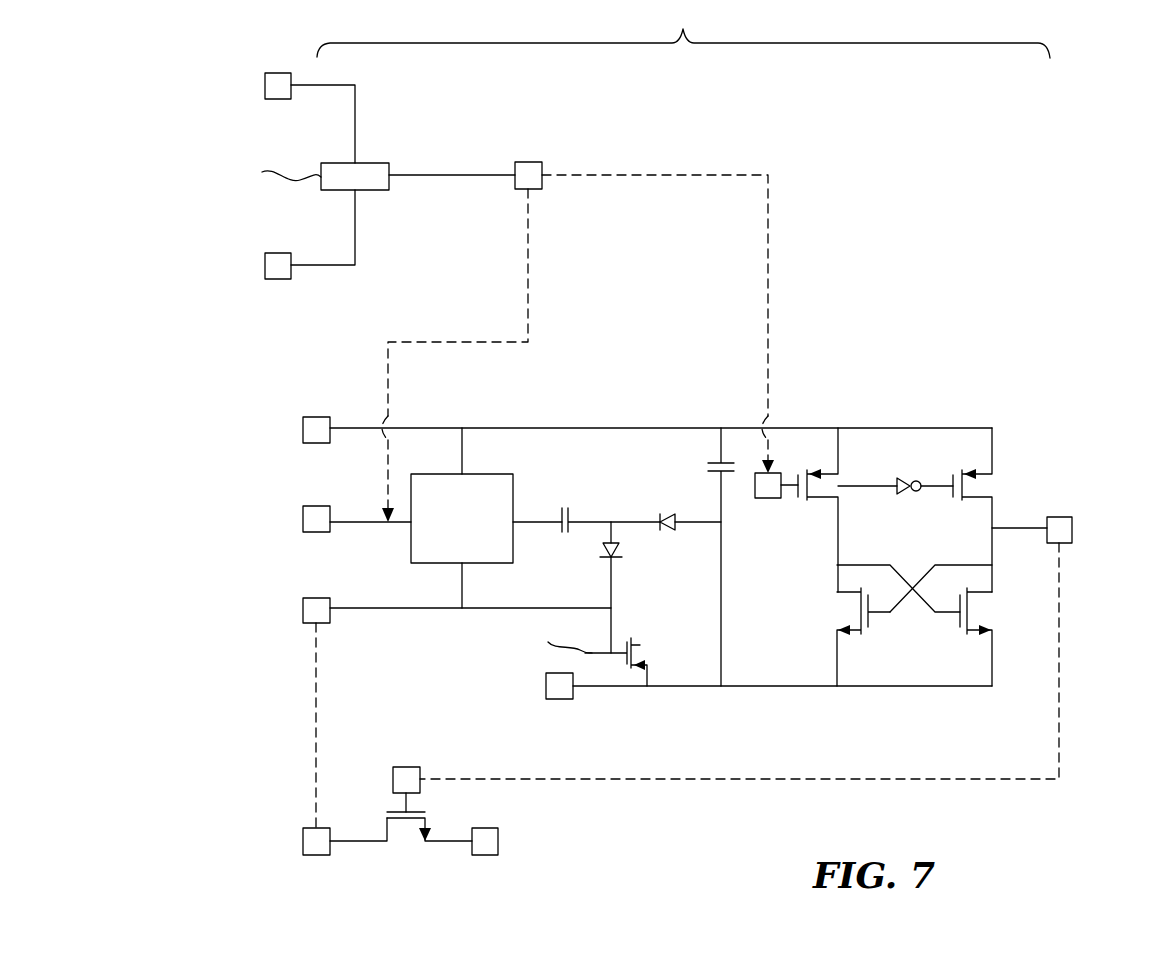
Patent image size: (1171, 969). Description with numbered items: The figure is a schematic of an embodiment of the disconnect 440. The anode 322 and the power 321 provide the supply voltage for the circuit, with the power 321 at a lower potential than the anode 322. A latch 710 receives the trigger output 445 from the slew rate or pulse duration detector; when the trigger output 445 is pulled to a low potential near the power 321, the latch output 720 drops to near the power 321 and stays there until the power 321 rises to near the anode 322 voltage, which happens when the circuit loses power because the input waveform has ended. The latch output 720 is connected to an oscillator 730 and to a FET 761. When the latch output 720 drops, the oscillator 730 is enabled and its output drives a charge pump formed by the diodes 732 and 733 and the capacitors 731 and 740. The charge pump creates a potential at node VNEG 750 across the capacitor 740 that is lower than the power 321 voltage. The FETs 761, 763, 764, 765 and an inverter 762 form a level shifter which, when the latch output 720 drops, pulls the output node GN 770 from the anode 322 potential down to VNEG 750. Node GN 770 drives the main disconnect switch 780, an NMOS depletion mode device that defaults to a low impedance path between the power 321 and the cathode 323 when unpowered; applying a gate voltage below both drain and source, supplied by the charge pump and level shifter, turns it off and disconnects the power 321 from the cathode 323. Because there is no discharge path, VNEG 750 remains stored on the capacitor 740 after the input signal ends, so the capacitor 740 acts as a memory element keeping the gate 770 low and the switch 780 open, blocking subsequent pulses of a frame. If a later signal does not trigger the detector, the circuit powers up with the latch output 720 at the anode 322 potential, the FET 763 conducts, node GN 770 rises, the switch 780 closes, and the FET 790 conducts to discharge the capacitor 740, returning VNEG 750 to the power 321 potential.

The disconnect 440 is at (683, 30).
The anode 322 is at (265, 85).
The power 321 is at (265, 265).
The cathode 323 is at (487, 857).
The trigger output 445 is at (260, 174).
The latch 710 is at (370, 163).
The latch output 720 is at (528, 162).
The oscillator 730 is at (500, 474).
The capacitor 731 is at (558, 535).
The diode 732 is at (620, 553).
The diode 733 is at (660, 510).
The capacitor 740 is at (714, 463).
The node VNEG 750 is at (546, 686).
The FET 761 is at (800, 500).
The inverter 762 is at (905, 490).
The FET 763 is at (975, 470).
The FET 764 is at (840, 672).
The FET 765 is at (986, 672).
The output node GN 770 is at (1125, 535).
The disconnect switch 780 is at (405, 820).
The FET 790 is at (640, 646).